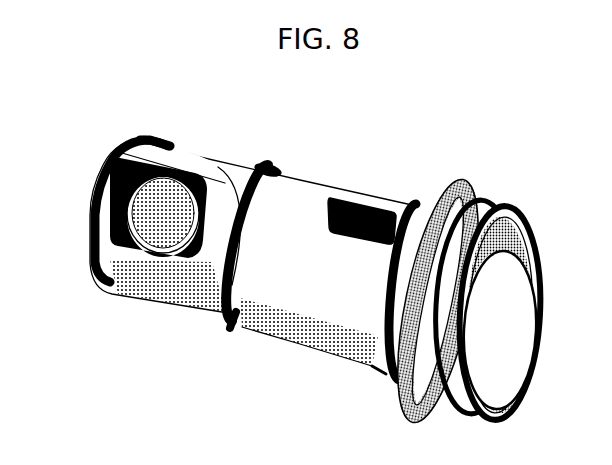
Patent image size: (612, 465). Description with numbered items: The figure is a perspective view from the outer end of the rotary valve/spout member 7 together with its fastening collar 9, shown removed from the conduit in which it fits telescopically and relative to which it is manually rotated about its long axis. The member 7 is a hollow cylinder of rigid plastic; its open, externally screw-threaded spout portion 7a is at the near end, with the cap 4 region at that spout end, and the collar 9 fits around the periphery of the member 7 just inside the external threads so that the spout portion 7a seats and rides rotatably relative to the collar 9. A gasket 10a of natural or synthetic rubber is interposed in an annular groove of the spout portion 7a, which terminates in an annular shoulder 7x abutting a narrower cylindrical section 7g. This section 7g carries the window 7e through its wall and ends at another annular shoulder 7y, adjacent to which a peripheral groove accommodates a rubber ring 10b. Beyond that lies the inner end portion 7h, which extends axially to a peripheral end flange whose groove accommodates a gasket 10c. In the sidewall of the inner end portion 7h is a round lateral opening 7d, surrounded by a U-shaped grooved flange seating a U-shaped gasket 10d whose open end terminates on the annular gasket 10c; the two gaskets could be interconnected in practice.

The rotary valve/spout member 7 is at (334, 147).
The spout portion 7a is at (512, 215).
The round lateral opening 7d is at (100, 203).
The window 7e is at (364, 203).
The cylindrical section 7g is at (310, 325).
The inner end portion 7h is at (168, 296).
The annular shoulder 7x is at (418, 197).
The annular shoulder 7y is at (254, 167).
The fastening collar 9 is at (485, 185).
The gasket 10a is at (363, 362).
The rubber ring 10b is at (233, 328).
The gasket 10c is at (156, 137).
The U-shaped gasket 10d is at (177, 175).
The shallow cylindrical cap 4 is at (520, 366).